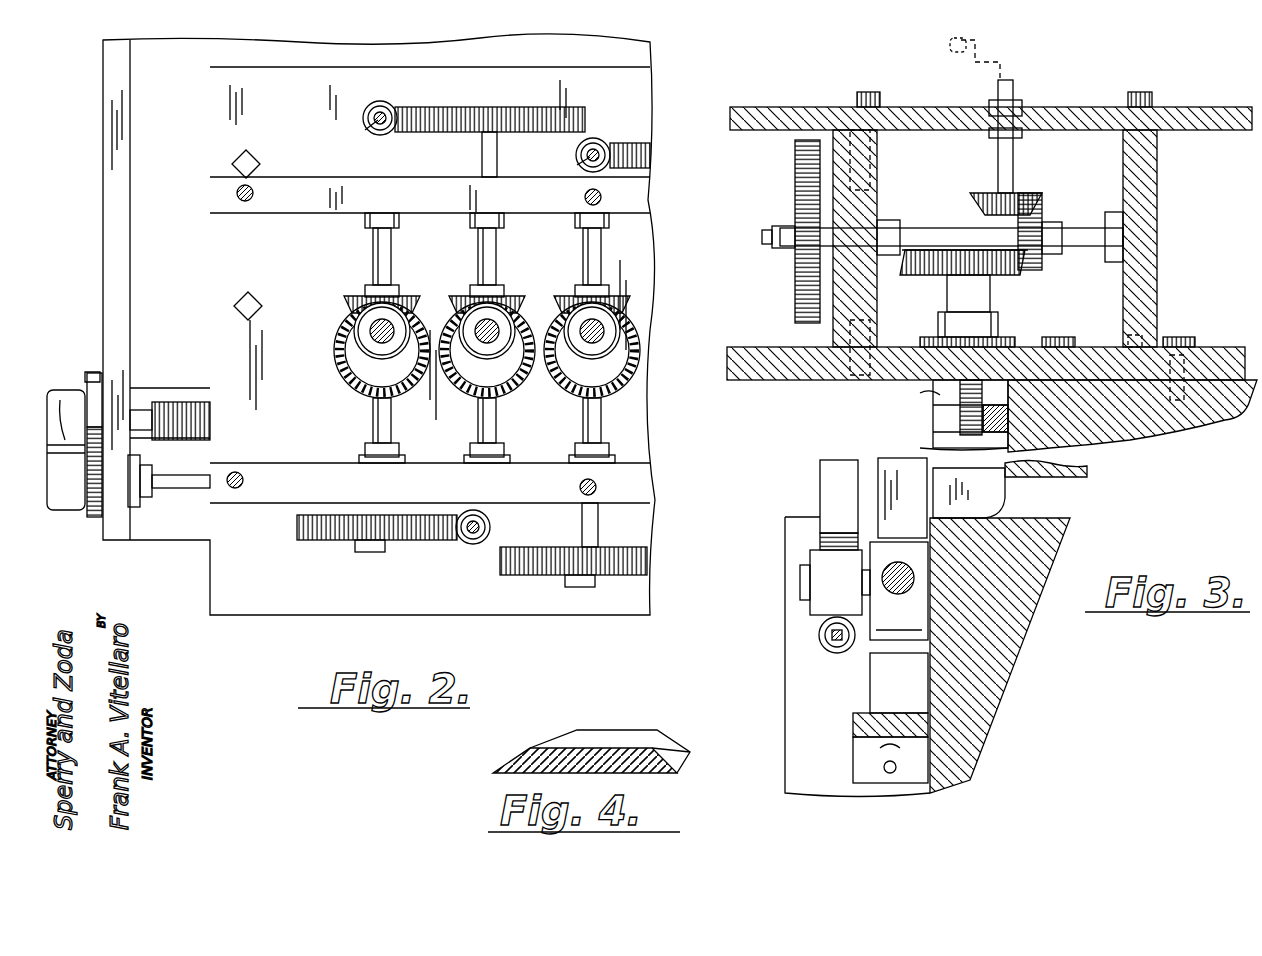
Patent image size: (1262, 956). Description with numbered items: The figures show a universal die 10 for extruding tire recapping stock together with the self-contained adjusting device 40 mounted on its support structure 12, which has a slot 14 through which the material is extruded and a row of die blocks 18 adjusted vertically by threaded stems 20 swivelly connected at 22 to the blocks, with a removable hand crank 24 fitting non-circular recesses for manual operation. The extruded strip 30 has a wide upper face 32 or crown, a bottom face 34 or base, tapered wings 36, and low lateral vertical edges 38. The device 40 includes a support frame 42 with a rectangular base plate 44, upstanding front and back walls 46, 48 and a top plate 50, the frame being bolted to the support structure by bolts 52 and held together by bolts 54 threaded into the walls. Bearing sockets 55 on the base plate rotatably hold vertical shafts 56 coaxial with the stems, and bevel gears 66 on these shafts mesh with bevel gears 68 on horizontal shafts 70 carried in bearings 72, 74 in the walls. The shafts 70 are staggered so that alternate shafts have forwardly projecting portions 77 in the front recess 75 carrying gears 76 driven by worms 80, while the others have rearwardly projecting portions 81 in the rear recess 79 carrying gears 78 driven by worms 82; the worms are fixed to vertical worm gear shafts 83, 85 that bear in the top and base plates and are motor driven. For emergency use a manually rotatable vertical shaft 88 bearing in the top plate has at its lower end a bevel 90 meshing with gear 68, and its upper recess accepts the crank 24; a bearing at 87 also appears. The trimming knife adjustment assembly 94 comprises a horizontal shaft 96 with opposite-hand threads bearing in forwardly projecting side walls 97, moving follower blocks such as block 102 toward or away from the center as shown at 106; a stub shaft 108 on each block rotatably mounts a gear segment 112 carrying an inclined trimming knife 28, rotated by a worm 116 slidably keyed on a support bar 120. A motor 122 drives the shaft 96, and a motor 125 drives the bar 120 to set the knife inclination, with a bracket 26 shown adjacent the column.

In FIG. 2, the universal die 10 is at (128, 270).
In FIG. 3, the universal die 10 is at (975, 682).
In FIG. 2, the support structure 12 is at (150, 205).
In FIG. 3, the support structure 12 is at (985, 642).
In FIG. 3, the slot 14 is at (1045, 477).
In FIG. 3, the die blocks 18 is at (945, 422).
In FIG. 3, the die block adjusting stems 20 is at (960, 400).
In FIG. 3, the swivel connection 22 is at (920, 458).
In FIG. 3, the crank 24 is at (1000, 55).
In FIG. 3, the bracket 26 is at (878, 470).
In FIG. 3, the inclined trimming knives 28 is at (820, 470).
In FIG. 4, the strip of tire recapping stock 30 is at (595, 748).
In FIG. 4, the upper face 32 is at (570, 748).
In FIG. 4, the bottom face 34 is at (660, 775).
In FIG. 4, the edge 36 is at (530, 750).
In FIG. 4, the lateral vertical edges 38 is at (500, 775).
In FIG. 2, the device 40 is at (225, 565).
In FIG. 3, the device 40 is at (762, 347).
In FIG. 2, the support frame 42 is at (210, 128).
In FIG. 3, the support frame 42 is at (932, 105).
In FIG. 2, the base plate 44 is at (215, 258).
In FIG. 3, the base plate 44 is at (1090, 347).
In FIG. 3, the front wall 46 is at (920, 285).
In FIG. 2, the back wall 48 is at (296, 190).
In FIG. 3, the back wall 48 is at (1157, 275).
In FIG. 3, the top plate 50 is at (1065, 107).
In FIG. 2, the bolts 52 is at (250, 150).
In FIG. 3, the bolts 52 is at (1052, 337).
In FIG. 2, the bolts 54 is at (253, 195).
In FIG. 3, the bolts 54 is at (870, 92).
In FIG. 3, the bearing sockets 55 is at (996, 318).
In FIG. 3, the shafts 56 is at (968, 293).
In FIG. 2, the bevel gears 66 is at (354, 338).
In FIG. 3, the bevel gears 66 is at (930, 275).
In FIG. 2, the bevel gears 68 is at (418, 298).
In FIG. 3, the bevel gears 68 is at (1044, 205).
In FIG. 2, the horizontally extending shafts 70 is at (392, 262).
In FIG. 3, the horizontally extending shafts 70 is at (912, 228).
In FIG. 2, the bearing 72 is at (364, 448).
In FIG. 3, the bearing 72 is at (892, 220).
In FIG. 2, the bearing 74 is at (372, 228).
In FIG. 3, the bearing 74 is at (1130, 222).
In FIG. 2, the front recess 75 is at (330, 615).
In FIG. 3, the front recess 75 is at (742, 130).
In FIG. 2, the gears 76 is at (315, 540).
In FIG. 3, the gears 76 is at (795, 170).
In FIG. 2, the forwardly projecting portions 77 is at (365, 553).
In FIG. 3, the forwardly projecting portions 77 is at (772, 240).
In FIG. 2, the gears 78 is at (438, 107).
In FIG. 2, the rear recess 79 is at (512, 177).
In FIG. 3, the rear recess 79 is at (1222, 132).
In FIG. 2, the worms 80 is at (470, 545).
In FIG. 2, the rearwardly projecting portions 81 is at (482, 150).
In FIG. 2, the worms 82 is at (382, 102).
In FIG. 2, the worm gear shafts 83 is at (490, 522).
In FIG. 2, the worm gear shafts 85 is at (365, 131).
In FIG. 2, the worm shaft 87 is at (420, 545).
In FIG. 3, the worm shaft 87 is at (952, 225).
In FIG. 2, the manually rotatable vertical shaft 88 is at (370, 325).
In FIG. 3, the manually rotatable vertical shaft 88 is at (1015, 168).
In FIG. 2, the bevel 90 is at (352, 378).
In FIG. 3, the bevel 90 is at (982, 193).
In FIG. 2, the trimming knife adjustment assembly 94 is at (160, 505).
In FIG. 3, the trimming knife adjustment assembly 94 is at (858, 650).
In FIG. 2, the shaft 96 is at (142, 410).
In FIG. 3, the shaft 96 is at (916, 578).
In FIG. 3, the side walls 97 is at (785, 712).
In FIG. 3, the follower block 102 is at (930, 555).
In FIG. 3, the follower block arrangement 106 is at (910, 596).
In FIG. 3, the stub shaft 108 is at (800, 580).
In FIG. 3, the gear segment 112 is at (840, 582).
In FIG. 3, the worm 116 is at (825, 652).
In FIG. 2, the support bar 120 is at (188, 490).
In FIG. 3, the support bar 120 is at (820, 632).
In FIG. 2, the motor 122 is at (68, 405).
In FIG. 2, the motor 125 is at (70, 510).